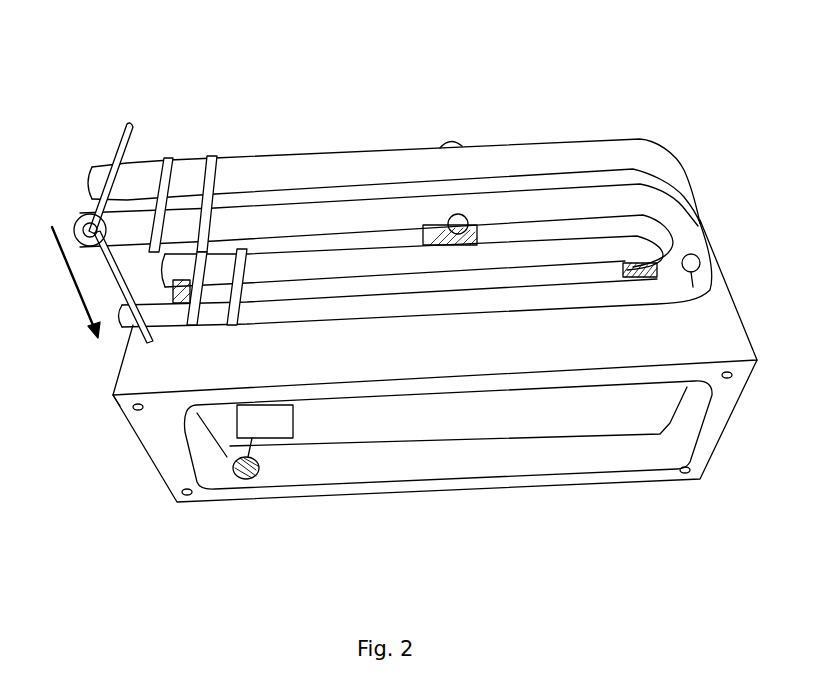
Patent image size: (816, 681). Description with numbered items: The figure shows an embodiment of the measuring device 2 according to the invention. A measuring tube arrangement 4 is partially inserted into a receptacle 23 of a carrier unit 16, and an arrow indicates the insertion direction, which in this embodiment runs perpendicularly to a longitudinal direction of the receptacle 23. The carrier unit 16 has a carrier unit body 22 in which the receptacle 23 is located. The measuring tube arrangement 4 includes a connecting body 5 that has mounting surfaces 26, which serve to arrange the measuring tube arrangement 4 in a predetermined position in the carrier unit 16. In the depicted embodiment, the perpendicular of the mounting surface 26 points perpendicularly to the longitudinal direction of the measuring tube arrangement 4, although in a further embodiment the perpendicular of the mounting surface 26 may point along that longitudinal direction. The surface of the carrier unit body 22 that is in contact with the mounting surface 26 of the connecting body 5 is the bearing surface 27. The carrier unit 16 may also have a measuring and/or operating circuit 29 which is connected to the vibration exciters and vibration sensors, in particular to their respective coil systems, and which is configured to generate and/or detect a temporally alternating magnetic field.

The measuring device 2 is at (395, 307).
The measuring tube arrangement 4 is at (390, 207).
The connecting body 5 is at (120, 203).
The carrier unit 16 is at (408, 409).
The carrier unit body 22 is at (337, 354).
The receptacle 23 is at (692, 254).
The mounting surface 26 is at (98, 248).
The bearing surface 27 is at (113, 395).
The measuring and/or operating circuit 29 is at (245, 442).